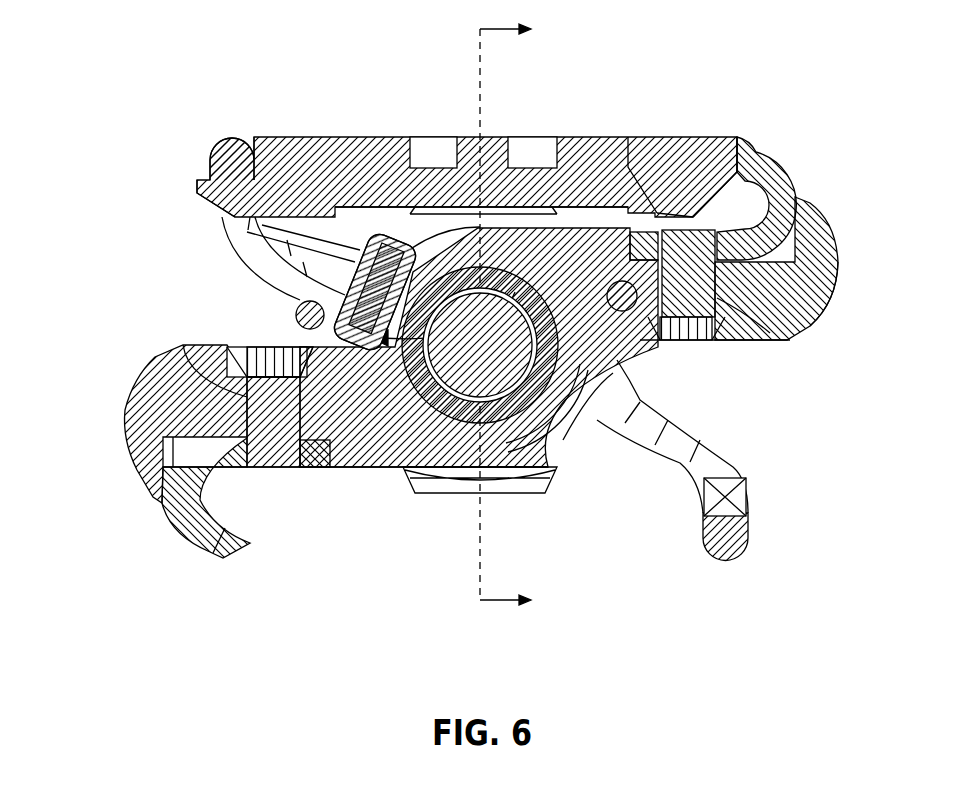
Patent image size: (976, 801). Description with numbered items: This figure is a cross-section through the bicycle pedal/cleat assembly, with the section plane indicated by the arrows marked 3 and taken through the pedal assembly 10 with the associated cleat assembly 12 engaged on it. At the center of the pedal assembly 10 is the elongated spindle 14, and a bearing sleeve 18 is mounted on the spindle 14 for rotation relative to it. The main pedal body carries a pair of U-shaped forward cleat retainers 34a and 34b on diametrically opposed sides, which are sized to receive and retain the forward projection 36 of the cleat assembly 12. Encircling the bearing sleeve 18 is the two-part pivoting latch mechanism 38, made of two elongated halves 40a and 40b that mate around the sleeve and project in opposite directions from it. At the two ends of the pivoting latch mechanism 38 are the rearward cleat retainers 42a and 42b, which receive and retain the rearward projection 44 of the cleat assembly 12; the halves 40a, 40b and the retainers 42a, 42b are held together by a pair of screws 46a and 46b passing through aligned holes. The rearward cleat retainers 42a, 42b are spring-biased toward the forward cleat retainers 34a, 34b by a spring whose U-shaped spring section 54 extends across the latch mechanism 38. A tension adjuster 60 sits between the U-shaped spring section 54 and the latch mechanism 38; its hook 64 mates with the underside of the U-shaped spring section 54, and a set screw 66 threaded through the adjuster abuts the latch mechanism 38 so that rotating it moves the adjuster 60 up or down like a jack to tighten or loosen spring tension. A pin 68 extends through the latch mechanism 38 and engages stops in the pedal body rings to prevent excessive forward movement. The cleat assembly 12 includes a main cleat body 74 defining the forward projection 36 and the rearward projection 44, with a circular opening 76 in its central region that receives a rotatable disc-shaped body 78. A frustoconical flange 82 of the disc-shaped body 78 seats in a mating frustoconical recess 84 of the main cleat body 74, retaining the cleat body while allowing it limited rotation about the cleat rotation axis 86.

The section line 3- 3 is at (517, 316).
The pedal assembly 10 is at (479, 307).
The cleat assembly 12 is at (524, 152).
The spindle 14 is at (430, 394).
The bearing sleeve 18 is at (440, 428).
The forward cleat retainer 34a is at (243, 247).
The forward cleat retainer 34b is at (737, 461).
The forward projection 36 is at (210, 193).
The pivoting latch mechanism 38 is at (834, 250).
The latch mechanism half 40a is at (810, 210).
The latch mechanism half 40b is at (124, 437).
The rearward cleat retainer 42a is at (760, 152).
The rearward cleat retainer 42b is at (185, 531).
The rearward projection 44 is at (710, 148).
The screw 46a is at (287, 346).
The screw 46b is at (688, 342).
The U-shaped spring section 54 is at (307, 303).
The tension adjuster 60 is at (480, 345).
The hook 64 is at (287, 337).
The set screw 66 is at (303, 410).
The pin 68 is at (618, 283).
The main cleat body 74 is at (690, 165).
The circular opening 76 is at (353, 137).
The disc-shaped body 78 is at (400, 137).
The frustoconical flange 82 is at (320, 200).
The frustoconical recess 84 is at (640, 195).
The cleat rotation axis 86 is at (463, 186).